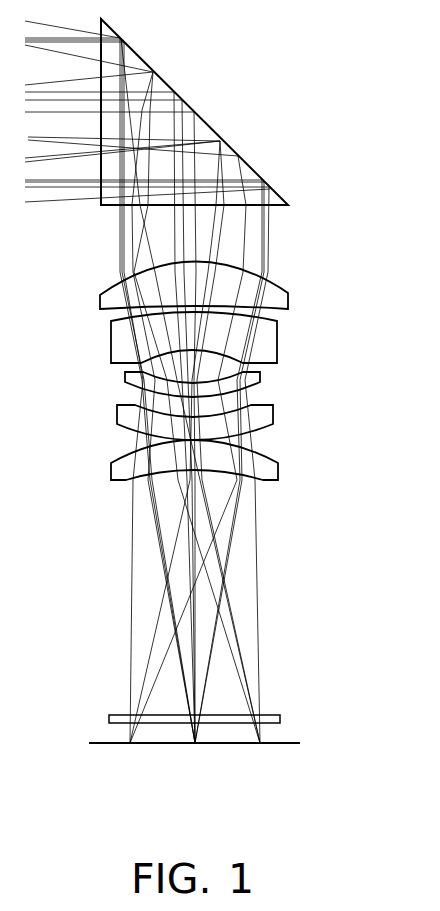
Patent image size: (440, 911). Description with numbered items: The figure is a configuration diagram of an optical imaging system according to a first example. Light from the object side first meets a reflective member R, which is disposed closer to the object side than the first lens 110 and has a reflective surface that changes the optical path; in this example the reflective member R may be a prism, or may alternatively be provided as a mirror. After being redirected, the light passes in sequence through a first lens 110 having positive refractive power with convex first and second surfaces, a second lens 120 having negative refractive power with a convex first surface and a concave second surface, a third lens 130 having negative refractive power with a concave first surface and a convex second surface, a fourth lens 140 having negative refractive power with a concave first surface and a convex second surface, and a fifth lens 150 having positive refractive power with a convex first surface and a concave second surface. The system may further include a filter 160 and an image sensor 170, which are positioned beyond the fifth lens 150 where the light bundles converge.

The reflective member R is at (210, 123).
The first lens 110 is at (275, 296).
The second lens 120 is at (268, 346).
The third lens 130 is at (260, 377).
The fourth lens 140 is at (262, 413).
The fifth lens 150 is at (273, 470).
The filter 160 is at (280, 719).
The image sensor 170 is at (290, 743).